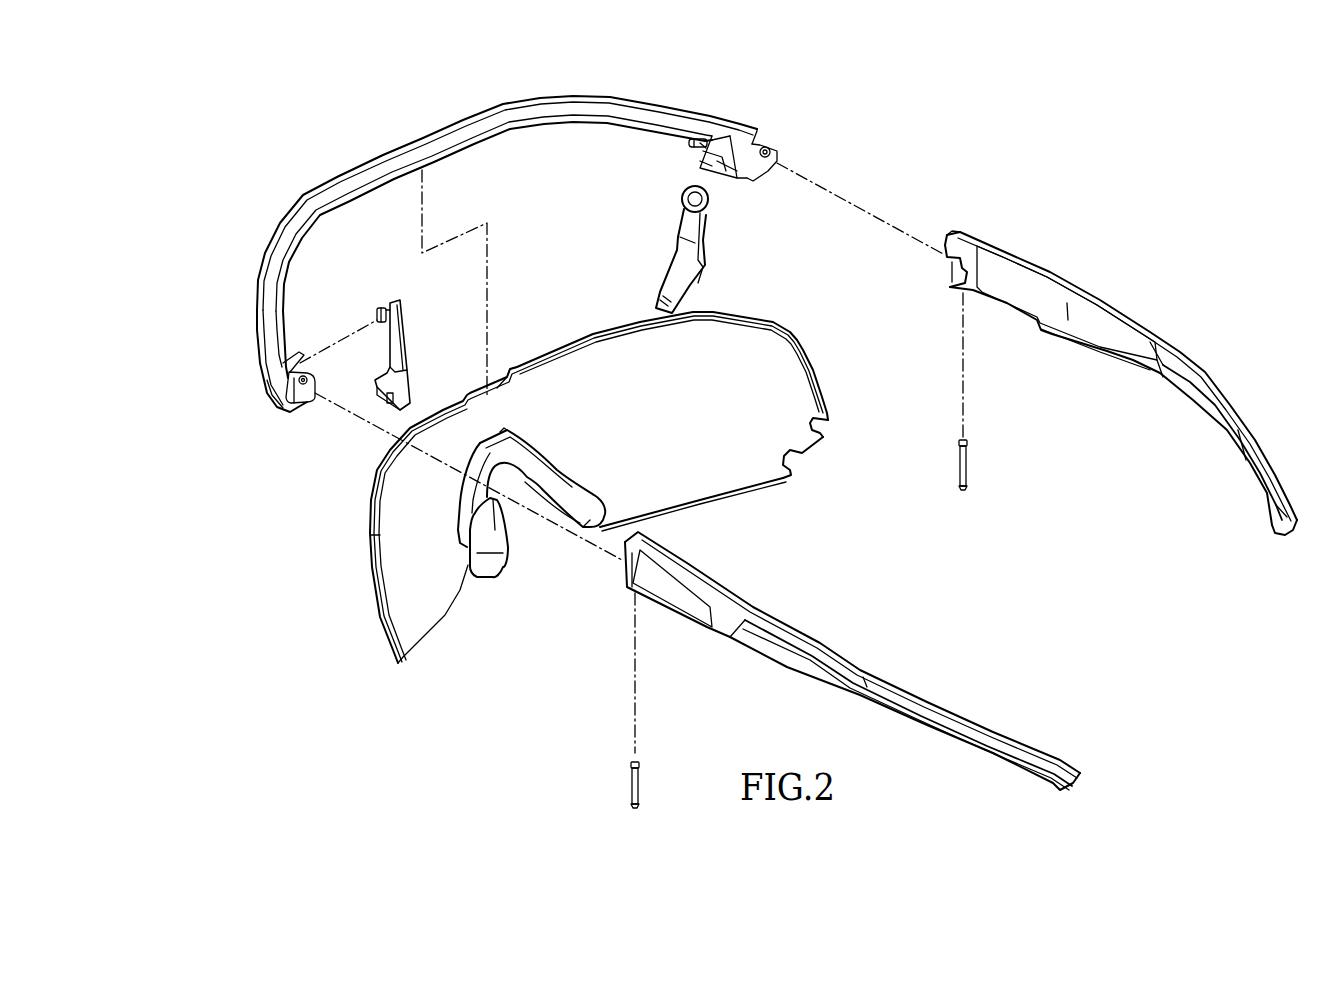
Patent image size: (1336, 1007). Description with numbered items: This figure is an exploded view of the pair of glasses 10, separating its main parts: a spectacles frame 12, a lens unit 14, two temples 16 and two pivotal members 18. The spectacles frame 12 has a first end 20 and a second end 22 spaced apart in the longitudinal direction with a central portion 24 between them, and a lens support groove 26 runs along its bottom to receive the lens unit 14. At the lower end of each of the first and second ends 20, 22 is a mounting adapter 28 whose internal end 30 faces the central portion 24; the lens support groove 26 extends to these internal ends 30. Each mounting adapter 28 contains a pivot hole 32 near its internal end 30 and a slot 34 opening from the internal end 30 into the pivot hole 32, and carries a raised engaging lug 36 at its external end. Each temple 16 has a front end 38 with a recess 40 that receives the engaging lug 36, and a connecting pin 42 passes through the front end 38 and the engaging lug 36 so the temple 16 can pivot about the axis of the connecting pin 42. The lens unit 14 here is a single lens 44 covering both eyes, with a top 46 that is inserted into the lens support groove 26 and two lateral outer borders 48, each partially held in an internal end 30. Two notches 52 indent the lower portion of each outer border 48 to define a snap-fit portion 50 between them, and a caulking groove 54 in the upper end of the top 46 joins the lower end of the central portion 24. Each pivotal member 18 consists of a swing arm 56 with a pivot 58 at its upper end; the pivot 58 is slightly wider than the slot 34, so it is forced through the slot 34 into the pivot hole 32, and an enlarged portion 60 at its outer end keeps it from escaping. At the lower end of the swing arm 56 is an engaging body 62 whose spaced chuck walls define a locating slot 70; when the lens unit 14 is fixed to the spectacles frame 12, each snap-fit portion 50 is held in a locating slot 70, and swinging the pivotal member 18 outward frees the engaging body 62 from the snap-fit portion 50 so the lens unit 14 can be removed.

The pair of glasses 10 is at (306, 695).
The spectacles frame 12 is at (510, 268).
The lens unit 14 is at (592, 458).
The temple 16 is at (961, 477).
The pivotal member 18 is at (593, 298).
The first end 20 is at (267, 330).
The second end 22 is at (742, 122).
The central portion 24 is at (400, 165).
The lens support groove 26 is at (430, 162).
The mounting adapter 28 is at (720, 171).
The internal end 30 is at (697, 158).
The pivot hole 32 is at (700, 141).
The slot 34 is at (690, 143).
The engaging lug 36 is at (277, 407).
The front end 38 is at (973, 237).
The recess 40 is at (950, 270).
The connecting pin 42 is at (970, 460).
The lens 44 is at (663, 490).
The top 46 is at (593, 367).
The outer border 48 is at (372, 573).
The snap-fit portion 50 is at (817, 445).
The notch 52 is at (825, 425).
The caulking groove 54 is at (497, 387).
The swing arm 56 is at (703, 283).
The pivot 58 is at (387, 313).
The enlarged portion 60 is at (377, 317).
The engaging body 62 is at (390, 417).
The locating slot 70 is at (393, 407).